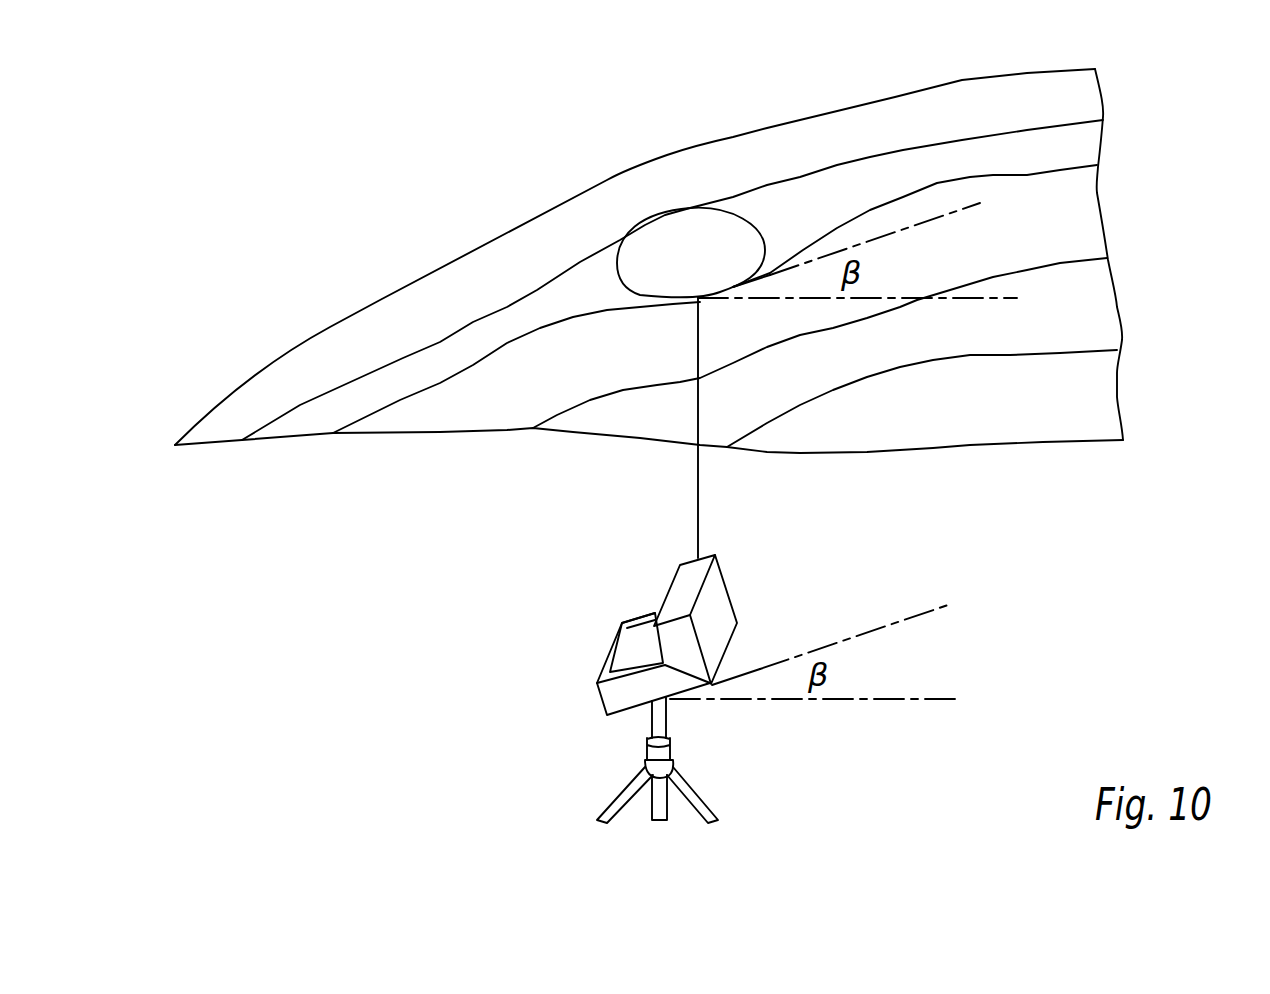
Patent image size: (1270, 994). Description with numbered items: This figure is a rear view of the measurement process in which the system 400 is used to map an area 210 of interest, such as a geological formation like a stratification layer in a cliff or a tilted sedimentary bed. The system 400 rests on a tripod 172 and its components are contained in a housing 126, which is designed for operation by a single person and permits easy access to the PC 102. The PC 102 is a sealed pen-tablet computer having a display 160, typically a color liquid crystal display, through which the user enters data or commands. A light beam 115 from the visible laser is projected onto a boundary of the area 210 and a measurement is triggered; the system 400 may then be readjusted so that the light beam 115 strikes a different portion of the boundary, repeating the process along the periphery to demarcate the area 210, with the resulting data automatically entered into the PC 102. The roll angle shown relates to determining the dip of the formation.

The area of interest 210 is at (678, 237).
The light beam 115 is at (698, 507).
The housing 126 is at (731, 597).
The display 160 is at (633, 638).
The PC 102 is at (607, 702).
The system 400 is at (592, 748).
The tripod 172 is at (713, 770).